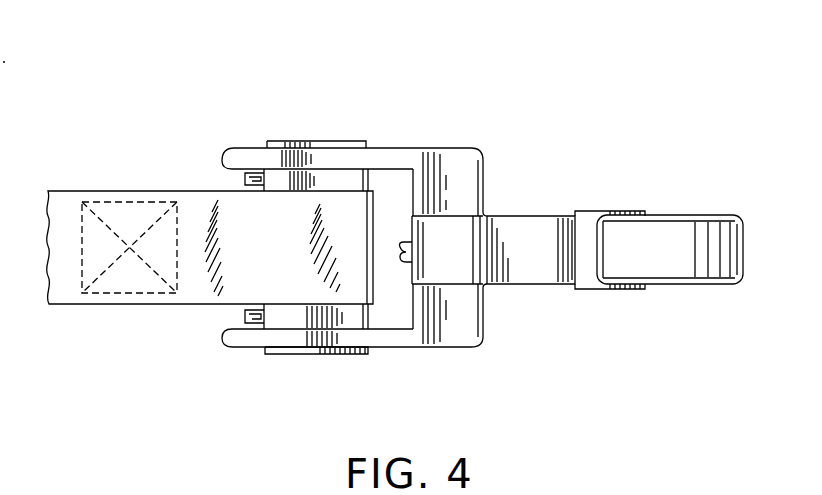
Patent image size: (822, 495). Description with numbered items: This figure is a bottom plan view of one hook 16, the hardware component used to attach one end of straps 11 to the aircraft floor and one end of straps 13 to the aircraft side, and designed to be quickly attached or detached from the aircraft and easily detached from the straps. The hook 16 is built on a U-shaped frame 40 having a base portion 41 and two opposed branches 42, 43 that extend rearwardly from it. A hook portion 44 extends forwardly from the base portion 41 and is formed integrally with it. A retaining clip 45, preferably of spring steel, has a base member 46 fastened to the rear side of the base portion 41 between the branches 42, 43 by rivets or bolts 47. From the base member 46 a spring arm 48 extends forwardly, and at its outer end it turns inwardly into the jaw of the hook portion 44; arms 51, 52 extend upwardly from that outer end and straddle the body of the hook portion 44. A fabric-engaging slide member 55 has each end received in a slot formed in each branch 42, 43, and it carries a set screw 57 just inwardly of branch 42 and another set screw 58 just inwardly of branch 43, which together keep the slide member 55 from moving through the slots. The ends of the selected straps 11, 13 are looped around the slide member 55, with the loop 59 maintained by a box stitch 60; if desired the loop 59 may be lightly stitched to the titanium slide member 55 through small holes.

The straps 11 is at (70, 281).
The straps 13 is at (210, 247).
The hook 16 is at (662, 200).
The U-shaped frame 40 is at (388, 148).
The base portion 41 is at (471, 183).
The branch 42 is at (446, 158).
The branch 43 is at (447, 342).
The hook portion 44 is at (715, 290).
The retaining clip 45 is at (523, 216).
The base member 46 is at (409, 230).
The rivets or bolts 47 is at (403, 263).
The spring arm 48 is at (540, 265).
The arm 51 is at (628, 291).
The arm 52 is at (600, 210).
The fabric-engaging slide member 55 is at (268, 142).
The set screw 57 is at (247, 181).
The set screw 58 is at (243, 318).
The loop 59 is at (313, 273).
The box stitch 60 is at (147, 283).